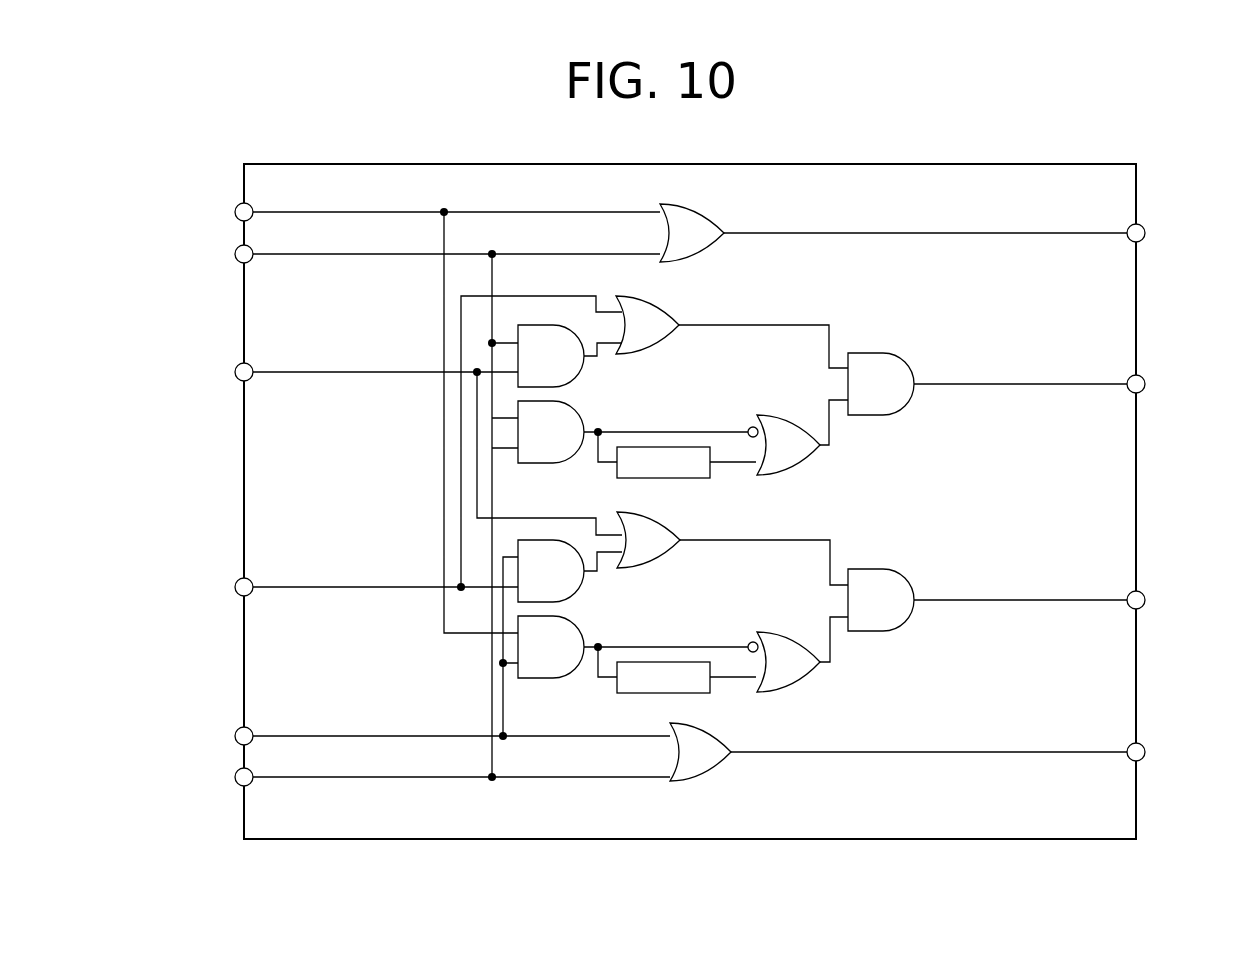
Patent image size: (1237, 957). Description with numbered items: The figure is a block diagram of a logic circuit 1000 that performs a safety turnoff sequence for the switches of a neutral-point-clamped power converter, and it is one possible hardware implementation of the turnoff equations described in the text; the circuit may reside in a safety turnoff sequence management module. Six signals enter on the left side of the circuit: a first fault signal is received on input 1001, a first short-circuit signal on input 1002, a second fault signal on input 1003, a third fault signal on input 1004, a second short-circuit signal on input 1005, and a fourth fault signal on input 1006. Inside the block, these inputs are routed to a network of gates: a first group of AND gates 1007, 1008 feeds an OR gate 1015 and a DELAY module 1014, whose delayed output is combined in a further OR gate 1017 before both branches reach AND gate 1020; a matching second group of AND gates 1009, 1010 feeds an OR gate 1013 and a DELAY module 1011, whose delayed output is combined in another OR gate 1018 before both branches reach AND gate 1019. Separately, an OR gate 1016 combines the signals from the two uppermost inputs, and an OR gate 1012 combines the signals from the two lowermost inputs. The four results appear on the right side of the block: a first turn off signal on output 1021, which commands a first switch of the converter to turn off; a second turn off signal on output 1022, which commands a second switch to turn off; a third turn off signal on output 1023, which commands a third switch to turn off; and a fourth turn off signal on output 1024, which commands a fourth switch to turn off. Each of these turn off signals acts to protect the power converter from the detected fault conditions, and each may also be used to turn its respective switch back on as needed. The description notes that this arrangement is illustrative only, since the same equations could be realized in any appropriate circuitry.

The logic circuit 1000 is at (243, 148).
The input 1001 is at (234, 212).
The input 1002 is at (235, 255).
The input 1003 is at (235, 373).
The input 1004 is at (235, 587).
The input 1005 is at (235, 737).
The input 1006 is at (235, 777).
The AND gate 1007 is at (575, 384).
The AND gate 1008 is at (580, 412).
The AND gate 1009 is at (575, 598).
The AND gate 1010 is at (582, 625).
The DELAY module 1011 is at (630, 693).
The OR gate 1012 is at (693, 777).
The OR gate 1013 is at (668, 527).
The DELAY module 1014 is at (632, 478).
The OR gate 1015 is at (668, 340).
The OR gate 1016 is at (700, 248).
The OR gate with inverting input 1017 is at (790, 468).
The OR gate with inverting input 1018 is at (790, 683).
The AND gate 1019 is at (863, 570).
The AND gate 1020 is at (865, 353).
The output 1021 is at (1145, 233).
The output 1022 is at (1145, 382).
The output 1023 is at (1145, 600).
The output 1024 is at (1145, 752).